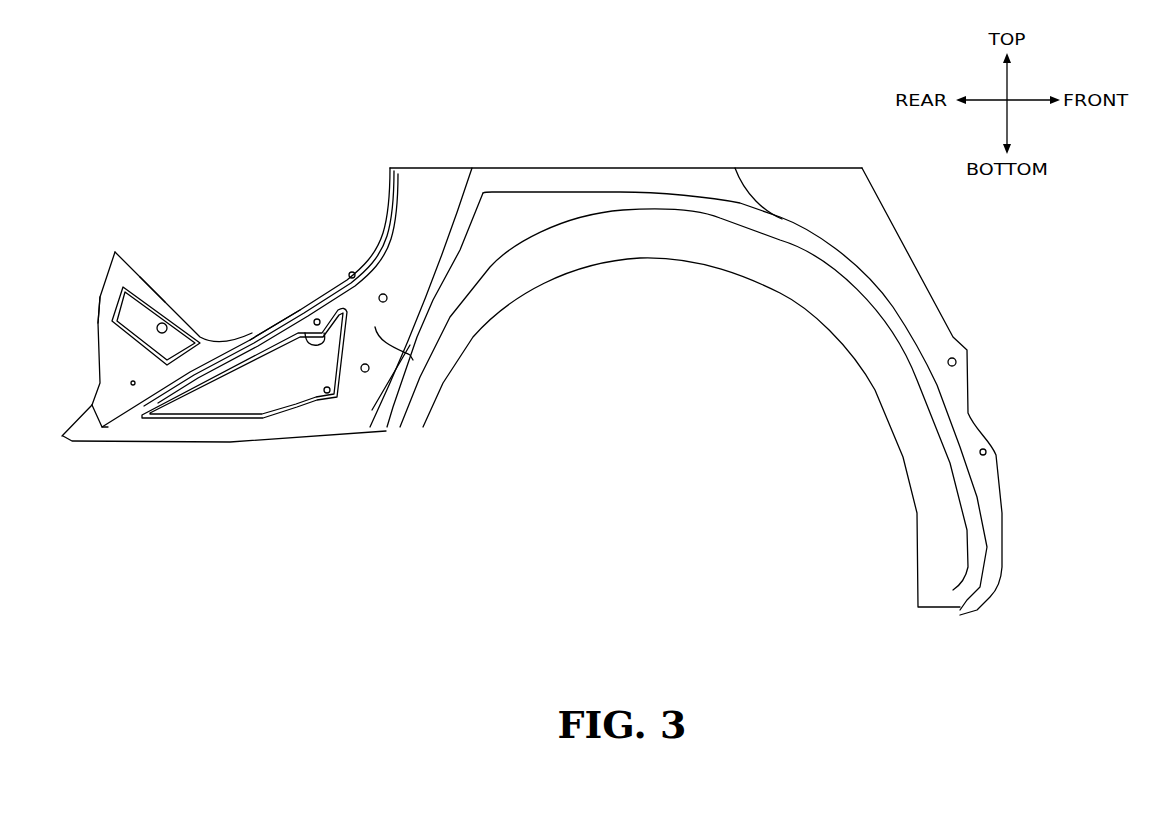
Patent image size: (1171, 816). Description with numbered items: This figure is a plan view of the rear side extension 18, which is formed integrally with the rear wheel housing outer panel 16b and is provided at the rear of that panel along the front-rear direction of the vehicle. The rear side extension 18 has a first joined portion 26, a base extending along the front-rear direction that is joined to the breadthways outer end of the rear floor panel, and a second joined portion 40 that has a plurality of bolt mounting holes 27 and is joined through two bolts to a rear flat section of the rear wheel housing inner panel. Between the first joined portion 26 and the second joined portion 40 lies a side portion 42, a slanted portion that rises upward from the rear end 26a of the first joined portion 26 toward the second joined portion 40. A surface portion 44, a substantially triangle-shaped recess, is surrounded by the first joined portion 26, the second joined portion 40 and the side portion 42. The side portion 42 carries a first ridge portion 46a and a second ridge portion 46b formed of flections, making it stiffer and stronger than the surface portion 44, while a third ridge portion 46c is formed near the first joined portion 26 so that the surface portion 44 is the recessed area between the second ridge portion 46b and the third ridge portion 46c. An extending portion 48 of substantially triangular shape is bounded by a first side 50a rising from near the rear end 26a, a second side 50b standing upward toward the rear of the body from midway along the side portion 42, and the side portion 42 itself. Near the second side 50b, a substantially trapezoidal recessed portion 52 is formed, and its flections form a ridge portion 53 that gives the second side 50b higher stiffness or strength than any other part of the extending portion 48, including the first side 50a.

The rear wheel housing outer panel 16b is at (657, 270).
The rear side extension 18 is at (240, 272).
The first joined portion 26 is at (233, 430).
The rear end of the first joined portion 26a is at (63, 438).
The bolt mounting holes 27 is at (387, 301).
The second joined portion 40 is at (413, 353).
The side portion 42 is at (250, 340).
The surface portion 44 is at (278, 392).
The first ridge portion 46a is at (352, 272).
The second ridge portion 46b is at (313, 320).
The third ridge portion 46c is at (324, 395).
The extending portion 48 is at (134, 262).
The first side 50a is at (98, 311).
The second side 50b is at (151, 298).
The recessed portion 52 is at (150, 337).
The ridge portion 53 is at (175, 319).